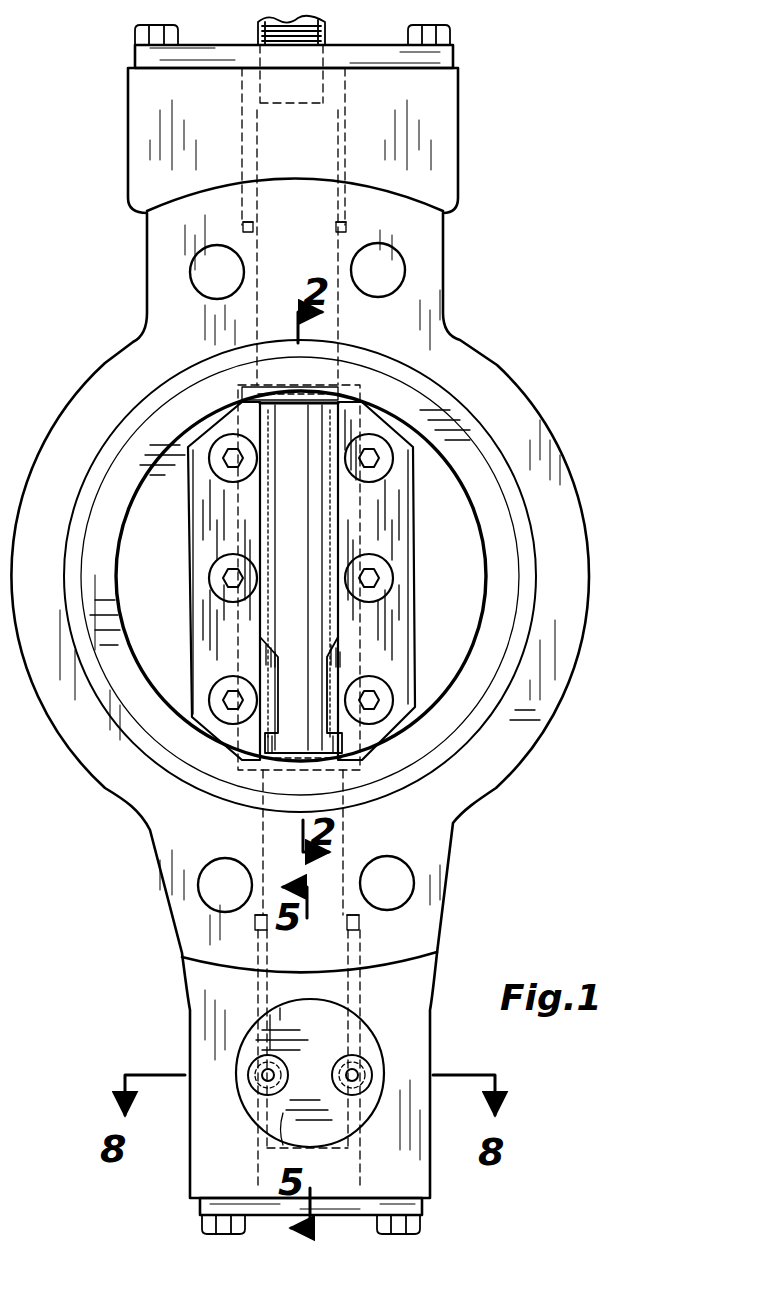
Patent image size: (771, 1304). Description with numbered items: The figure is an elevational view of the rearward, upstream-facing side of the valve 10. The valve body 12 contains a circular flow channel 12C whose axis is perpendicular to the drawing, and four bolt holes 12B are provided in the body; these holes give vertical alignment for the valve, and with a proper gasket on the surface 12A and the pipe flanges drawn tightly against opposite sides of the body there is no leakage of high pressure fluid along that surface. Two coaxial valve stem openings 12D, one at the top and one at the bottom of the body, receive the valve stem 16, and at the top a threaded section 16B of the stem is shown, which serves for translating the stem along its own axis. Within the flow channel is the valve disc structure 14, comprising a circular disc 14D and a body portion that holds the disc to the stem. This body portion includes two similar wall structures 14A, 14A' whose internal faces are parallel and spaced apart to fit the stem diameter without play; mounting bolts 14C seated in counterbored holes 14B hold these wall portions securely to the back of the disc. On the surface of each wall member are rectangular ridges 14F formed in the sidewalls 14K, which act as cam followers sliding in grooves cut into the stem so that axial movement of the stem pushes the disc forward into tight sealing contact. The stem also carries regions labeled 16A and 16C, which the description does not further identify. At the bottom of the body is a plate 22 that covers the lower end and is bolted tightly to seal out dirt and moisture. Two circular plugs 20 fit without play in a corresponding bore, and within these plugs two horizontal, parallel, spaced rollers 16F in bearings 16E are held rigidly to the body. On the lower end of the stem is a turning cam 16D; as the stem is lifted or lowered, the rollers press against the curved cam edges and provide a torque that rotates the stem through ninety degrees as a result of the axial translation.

The valve 10 is at (325, 617).
The valve body 12 is at (485, 346).
The body surface 12A is at (579, 612).
The bolt holes 12B is at (388, 262).
The circular flow channel 12C is at (138, 641).
The valve stem openings 12D is at (338, 333).
The valve disc structure 14 is at (320, 582).
The wall structure 14A is at (397, 581).
The wall structure 14A' is at (196, 581).
The counterbored holes 14B is at (388, 697).
The bolts 14C is at (376, 683).
The circular disc 14D is at (445, 492).
The rectangular ridges 14F is at (243, 754).
The sidewalls 14K is at (338, 403).
The valve stem 16 is at (309, 574).
The upper rod portion 16A is at (312, 208).
The threaded section of valve stem 16B is at (326, 26).
The lower rod portion 16C is at (333, 941).
The turning cam 16D is at (320, 1028).
The bearings 16E is at (358, 1072).
The rollers 16F is at (268, 1078).
The circular plugs 20 is at (283, 1113).
The plate 22 is at (422, 1208).